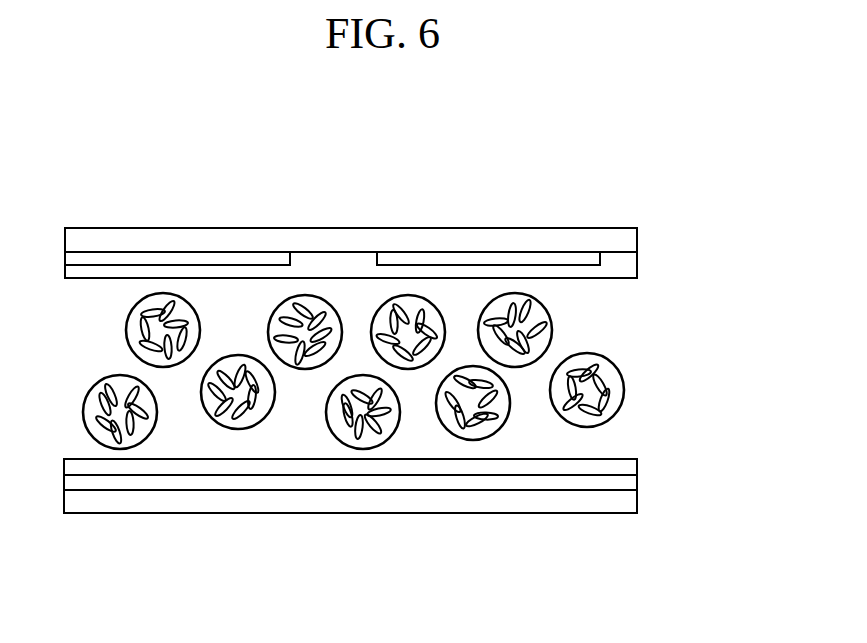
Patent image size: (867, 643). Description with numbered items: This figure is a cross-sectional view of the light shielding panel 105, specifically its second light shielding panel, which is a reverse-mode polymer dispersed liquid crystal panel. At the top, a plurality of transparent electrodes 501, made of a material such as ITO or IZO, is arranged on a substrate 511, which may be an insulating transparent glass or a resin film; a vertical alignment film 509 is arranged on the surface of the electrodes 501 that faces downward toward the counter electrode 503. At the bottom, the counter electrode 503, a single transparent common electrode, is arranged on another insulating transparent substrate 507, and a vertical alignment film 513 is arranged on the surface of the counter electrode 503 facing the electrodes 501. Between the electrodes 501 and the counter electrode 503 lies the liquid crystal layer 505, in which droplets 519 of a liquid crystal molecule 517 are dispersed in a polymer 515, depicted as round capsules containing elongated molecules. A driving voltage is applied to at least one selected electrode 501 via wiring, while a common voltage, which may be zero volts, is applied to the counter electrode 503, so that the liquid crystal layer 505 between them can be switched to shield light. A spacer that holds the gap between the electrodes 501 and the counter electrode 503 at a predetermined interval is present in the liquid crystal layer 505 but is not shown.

The light shielding panel 105 is at (613, 160).
The electrodes 501 is at (185, 257).
The counter electrode 503 is at (637, 481).
The liquid crystal layer 505 is at (642, 290).
The substrate 507 is at (637, 506).
The vertical alignment film 509 is at (637, 265).
The substrate 511 is at (637, 237).
The vertical alignment film 513 is at (637, 468).
The polymer 515 is at (525, 437).
The liquid crystal molecule 517 is at (262, 417).
The droplets 519 is at (230, 428).